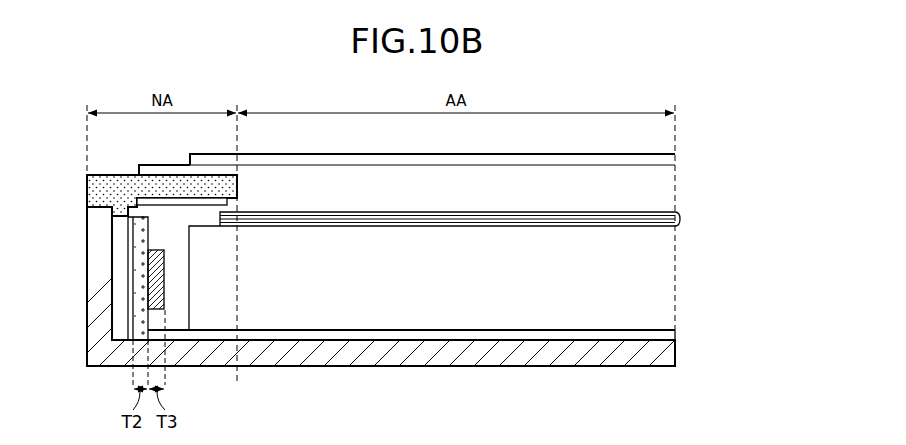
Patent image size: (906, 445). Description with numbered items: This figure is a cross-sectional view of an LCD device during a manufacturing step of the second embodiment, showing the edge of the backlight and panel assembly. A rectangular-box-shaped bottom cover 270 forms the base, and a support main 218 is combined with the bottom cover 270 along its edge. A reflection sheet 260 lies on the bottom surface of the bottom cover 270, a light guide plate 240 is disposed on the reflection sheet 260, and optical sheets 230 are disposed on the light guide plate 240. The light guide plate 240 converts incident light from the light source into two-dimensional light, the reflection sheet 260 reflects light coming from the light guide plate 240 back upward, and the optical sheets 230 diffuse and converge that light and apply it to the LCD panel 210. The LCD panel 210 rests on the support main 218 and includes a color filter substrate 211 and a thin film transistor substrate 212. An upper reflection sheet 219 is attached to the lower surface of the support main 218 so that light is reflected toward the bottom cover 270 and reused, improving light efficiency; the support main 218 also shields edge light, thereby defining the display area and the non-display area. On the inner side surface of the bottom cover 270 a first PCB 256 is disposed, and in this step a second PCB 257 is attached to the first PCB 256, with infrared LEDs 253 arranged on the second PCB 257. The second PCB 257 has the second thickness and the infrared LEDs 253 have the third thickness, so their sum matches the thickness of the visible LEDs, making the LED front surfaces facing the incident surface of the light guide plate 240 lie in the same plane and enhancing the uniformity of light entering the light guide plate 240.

The LCD panel 210 is at (457, 167).
The color filter substrate 211 is at (676, 160).
The thin film transistor substrate 212 is at (676, 171).
The support main 218 is at (87, 187).
The upper reflection sheet 219 is at (167, 203).
The optical sheets 230 is at (681, 218).
The light guide plate 240 is at (676, 265).
The infrared LEDs 253 is at (140, 272).
The first PCB 256 is at (122, 235).
The second PCB 257 is at (152, 297).
The reflection sheet 260 is at (676, 333).
The bottom cover 270 is at (420, 366).